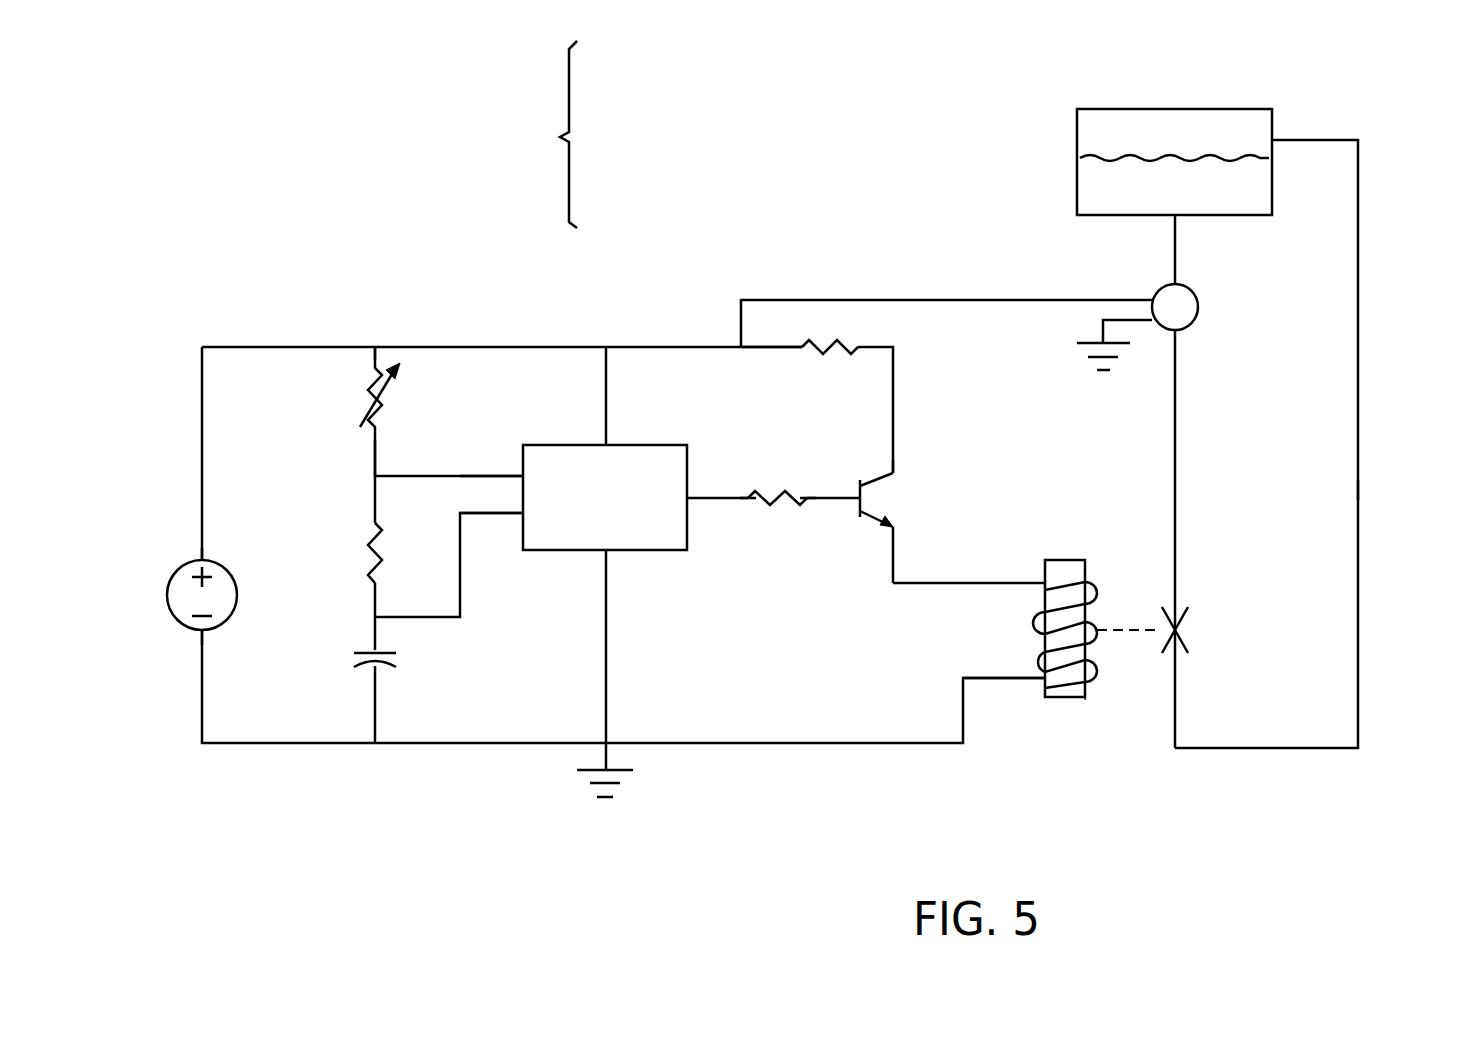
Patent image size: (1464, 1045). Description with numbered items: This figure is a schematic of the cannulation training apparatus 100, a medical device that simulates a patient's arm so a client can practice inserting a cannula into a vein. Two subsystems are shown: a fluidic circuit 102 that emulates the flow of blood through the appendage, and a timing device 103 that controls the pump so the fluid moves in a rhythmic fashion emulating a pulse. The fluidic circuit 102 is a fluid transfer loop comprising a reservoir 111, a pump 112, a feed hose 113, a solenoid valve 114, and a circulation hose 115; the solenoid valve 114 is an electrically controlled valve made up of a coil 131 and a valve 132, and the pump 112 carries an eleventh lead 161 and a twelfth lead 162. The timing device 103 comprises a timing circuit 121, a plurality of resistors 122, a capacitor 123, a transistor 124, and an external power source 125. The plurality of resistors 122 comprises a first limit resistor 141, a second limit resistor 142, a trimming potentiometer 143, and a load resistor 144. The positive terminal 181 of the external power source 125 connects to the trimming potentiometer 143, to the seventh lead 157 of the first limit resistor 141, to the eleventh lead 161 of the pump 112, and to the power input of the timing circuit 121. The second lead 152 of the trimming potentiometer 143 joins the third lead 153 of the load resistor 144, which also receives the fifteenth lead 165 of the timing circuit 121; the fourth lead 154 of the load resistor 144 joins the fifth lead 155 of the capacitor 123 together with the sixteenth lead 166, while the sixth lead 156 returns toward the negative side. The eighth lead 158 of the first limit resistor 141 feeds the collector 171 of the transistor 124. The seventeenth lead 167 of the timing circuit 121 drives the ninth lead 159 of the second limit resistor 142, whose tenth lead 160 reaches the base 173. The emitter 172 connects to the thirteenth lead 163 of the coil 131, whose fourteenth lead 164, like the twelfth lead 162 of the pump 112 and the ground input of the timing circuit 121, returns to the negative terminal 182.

The cannulation training apparatus 100 is at (395, 833).
The fluidic circuit 102 is at (1359, 196).
The timing device 103 is at (253, 305).
The reservoir 111 is at (1253, 121).
The pump 112 is at (1199, 308).
The feed hose 113 is at (1176, 447).
The solenoid valve 114 is at (1170, 662).
The circulation hose 115 is at (1235, 205).
The timing circuit 121 is at (645, 552).
The plurality of resistors 122 is at (537, 134).
The capacitor 123 is at (398, 660).
The transistor 124 is at (897, 498).
The external power source 125 is at (166, 578).
The coil 131 is at (1063, 558).
The valve 132 is at (1190, 628).
The first limit resistor 141 is at (833, 355).
The second limit resistor 142 is at (626, 109).
The trimming potentiometer 143 is at (397, 415).
The load resistor 144 is at (425, 520).
The second lead 152 is at (375, 444).
The third lead 153 is at (375, 494).
The fourth lead 154 is at (375, 586).
The fifth lead 155 is at (375, 632).
The sixth lead 156 is at (375, 690).
The seventh lead 157 is at (374, 360).
The eighth lead 158 is at (878, 343).
The ninth lead 159 is at (746, 490).
The tenth lead 160 is at (813, 492).
The eleventh lead 161 is at (1126, 298).
The twelfth lead 162 is at (1133, 322).
The thirteenth lead 163 is at (988, 582).
The fourteenth lead 164 is at (992, 676).
The fifteenth lead 165 is at (501, 472).
The sixteenth lead 166 is at (492, 516).
The seventeenth lead 167 is at (710, 505).
The collector 171 is at (896, 480).
The emitter 172 is at (890, 560).
The base 173 is at (845, 507).
The positive terminal 181 is at (203, 555).
The negative terminal 182 is at (203, 637).